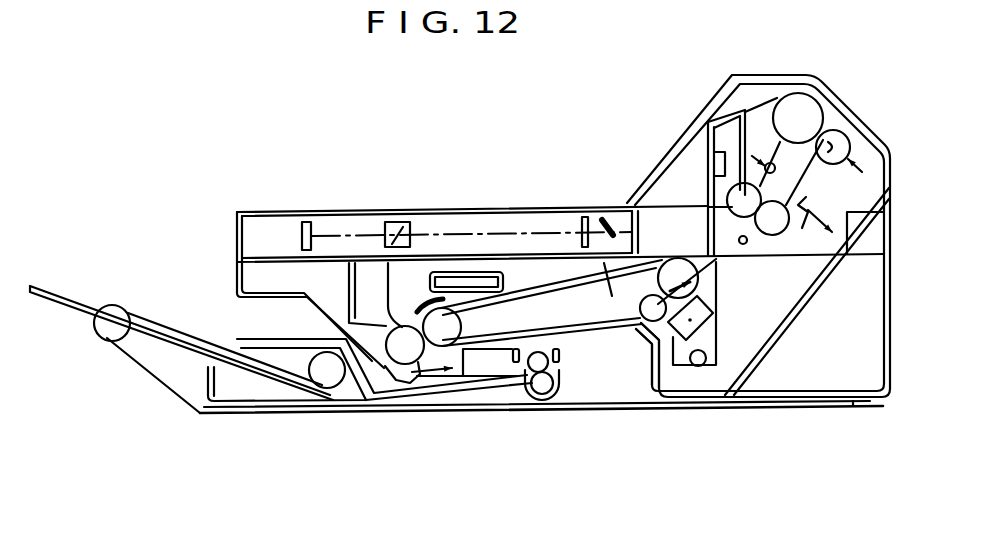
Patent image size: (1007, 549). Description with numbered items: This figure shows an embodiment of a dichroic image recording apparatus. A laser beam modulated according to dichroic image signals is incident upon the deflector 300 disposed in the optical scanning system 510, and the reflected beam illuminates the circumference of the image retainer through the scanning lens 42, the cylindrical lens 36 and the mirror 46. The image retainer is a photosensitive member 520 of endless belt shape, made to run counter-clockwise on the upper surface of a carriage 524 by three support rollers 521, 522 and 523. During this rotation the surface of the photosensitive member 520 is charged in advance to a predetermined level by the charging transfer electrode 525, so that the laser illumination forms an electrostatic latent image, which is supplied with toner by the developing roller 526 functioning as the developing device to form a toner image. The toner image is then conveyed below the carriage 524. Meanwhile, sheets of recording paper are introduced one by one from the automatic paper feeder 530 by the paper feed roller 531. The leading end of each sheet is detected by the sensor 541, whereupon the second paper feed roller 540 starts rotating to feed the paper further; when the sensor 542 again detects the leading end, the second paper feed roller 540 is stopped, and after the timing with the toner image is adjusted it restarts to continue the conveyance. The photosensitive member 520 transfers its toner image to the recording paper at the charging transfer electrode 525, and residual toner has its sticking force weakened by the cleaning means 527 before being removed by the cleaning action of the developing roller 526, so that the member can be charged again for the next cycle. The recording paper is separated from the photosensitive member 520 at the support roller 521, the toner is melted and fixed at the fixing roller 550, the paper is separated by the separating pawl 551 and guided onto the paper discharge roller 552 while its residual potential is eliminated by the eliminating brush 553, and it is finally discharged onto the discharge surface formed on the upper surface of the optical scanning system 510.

The optical scanning system 510 is at (352, 172).
The deflector 300 is at (307, 221).
The scanning lens 42 is at (398, 222).
The cleaning means 527 is at (428, 296).
The photosensitive member 520 is at (521, 286).
The cylindrical lens 36 is at (583, 217).
The mirror 46 is at (611, 217).
The fixing roller 550 is at (730, 193).
The separating pawl 551 is at (720, 125).
The paper discharge roller 552 is at (801, 107).
The eliminating brush 553 is at (730, 92).
The support roller 521 is at (712, 277).
The charging transfer electrode 525 is at (714, 327).
The carriage 524 is at (642, 311).
The support roller 523 is at (648, 322).
The sensor 541 is at (514, 350).
The sensor 542 is at (558, 348).
The second paper feed roller 540 is at (543, 392).
The support roller 522 is at (439, 347).
The developing roller 526 is at (400, 360).
The paper feed roller 531 is at (327, 382).
The automatic paper feeder 530 is at (102, 293).